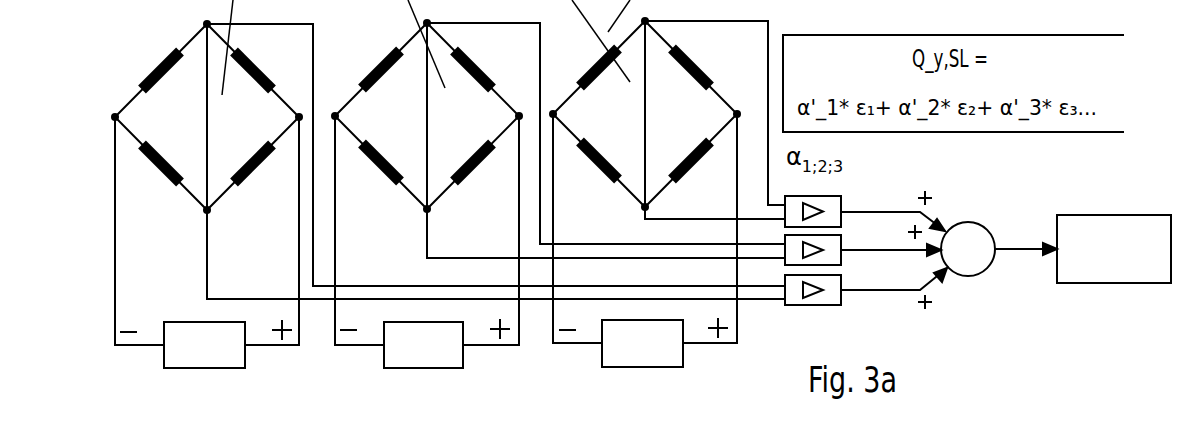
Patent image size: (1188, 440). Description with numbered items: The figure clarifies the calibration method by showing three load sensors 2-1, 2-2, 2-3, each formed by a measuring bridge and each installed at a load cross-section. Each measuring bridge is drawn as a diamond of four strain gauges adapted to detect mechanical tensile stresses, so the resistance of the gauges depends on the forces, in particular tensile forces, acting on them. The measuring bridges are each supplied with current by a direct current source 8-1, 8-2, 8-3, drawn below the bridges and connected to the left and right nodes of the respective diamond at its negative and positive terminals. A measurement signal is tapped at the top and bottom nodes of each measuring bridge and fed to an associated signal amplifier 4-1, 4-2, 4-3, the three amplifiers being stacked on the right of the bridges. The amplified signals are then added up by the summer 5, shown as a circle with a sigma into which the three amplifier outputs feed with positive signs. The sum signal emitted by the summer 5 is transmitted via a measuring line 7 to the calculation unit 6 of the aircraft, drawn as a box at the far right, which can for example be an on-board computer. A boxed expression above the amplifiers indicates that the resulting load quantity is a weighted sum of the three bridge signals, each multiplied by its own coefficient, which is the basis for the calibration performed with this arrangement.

The load sensor 2-1 is at (207, 117).
The load sensor 2-2 is at (427, 116).
The load sensor 2-3 is at (645, 114).
The signal amplifier 4-1 is at (831, 207).
The signal amplifier 4-2 is at (831, 249).
The signal amplifier 4-3 is at (831, 296).
The summer 5 is at (967, 276).
The calculation unit 6 is at (1113, 283).
The measuring line 7 is at (1017, 250).
The direct current source 8-1 is at (204, 345).
The direct current source 8-2 is at (423, 345).
The direct current source 8-3 is at (642, 343).